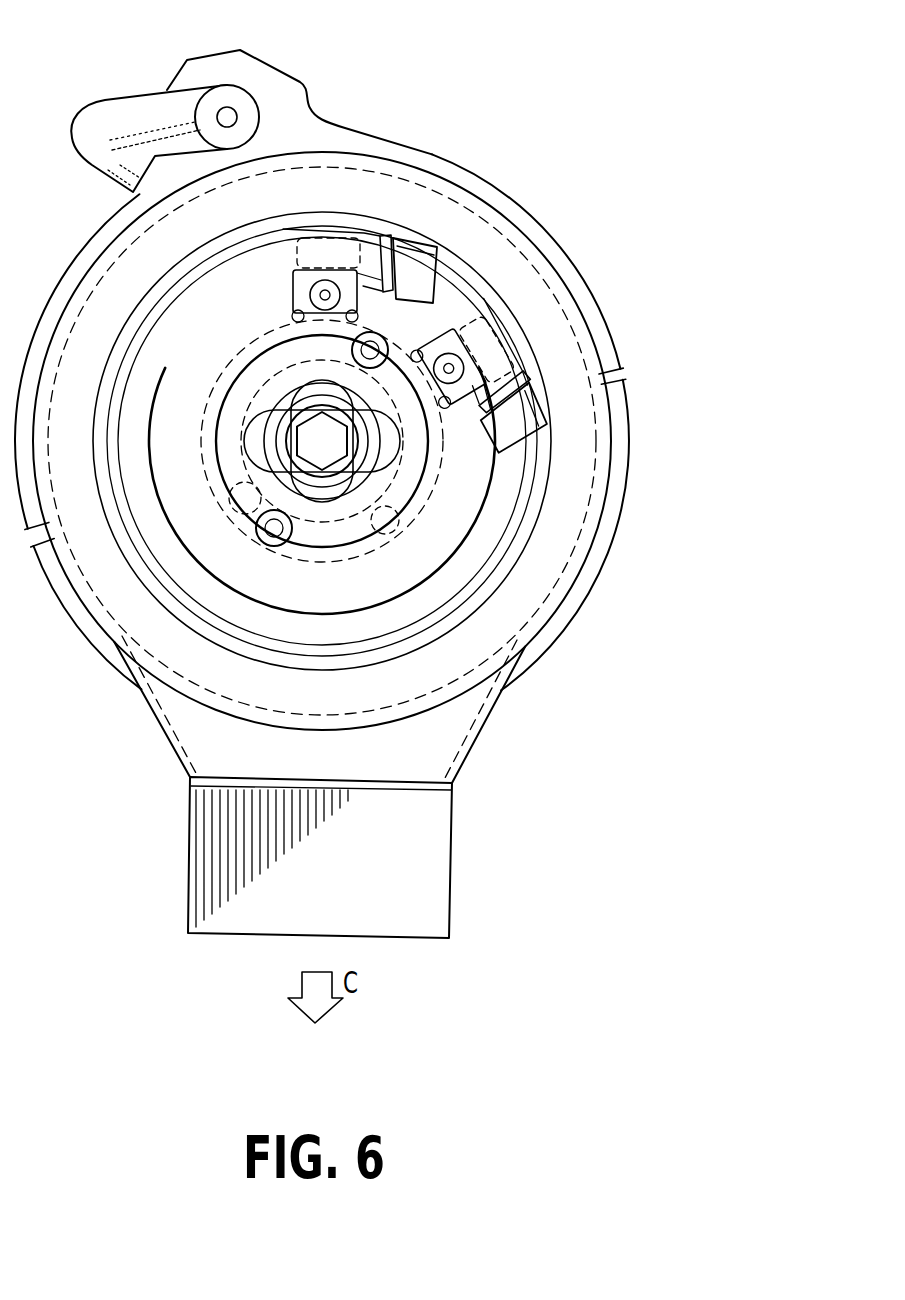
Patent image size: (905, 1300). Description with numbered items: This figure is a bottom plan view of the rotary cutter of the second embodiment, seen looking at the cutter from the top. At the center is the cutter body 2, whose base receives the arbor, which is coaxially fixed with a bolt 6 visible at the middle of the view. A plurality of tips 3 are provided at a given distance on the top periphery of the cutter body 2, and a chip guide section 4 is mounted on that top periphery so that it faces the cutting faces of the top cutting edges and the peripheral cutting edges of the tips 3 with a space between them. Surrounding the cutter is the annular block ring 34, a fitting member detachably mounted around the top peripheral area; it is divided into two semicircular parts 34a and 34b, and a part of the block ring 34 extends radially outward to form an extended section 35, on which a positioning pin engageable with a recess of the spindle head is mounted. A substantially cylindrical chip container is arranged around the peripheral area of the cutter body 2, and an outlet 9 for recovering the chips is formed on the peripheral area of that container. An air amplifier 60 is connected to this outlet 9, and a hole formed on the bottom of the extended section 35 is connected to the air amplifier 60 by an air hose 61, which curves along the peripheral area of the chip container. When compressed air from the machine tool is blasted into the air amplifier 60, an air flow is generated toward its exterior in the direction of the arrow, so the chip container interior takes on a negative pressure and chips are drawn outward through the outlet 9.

The cutter body 2 is at (447, 547).
The tips 3 is at (417, 273).
The chip guide section 4 is at (327, 253).
The bolt 6 is at (370, 450).
The outlet 9 is at (215, 795).
The block ring 34 is at (424, 422).
The semicircular part 34a is at (607, 320).
The semicircular part 34b is at (628, 435).
The extended section 35 is at (304, 83).
The air amplifier 60 is at (452, 868).
The air hose 61 is at (107, 100).